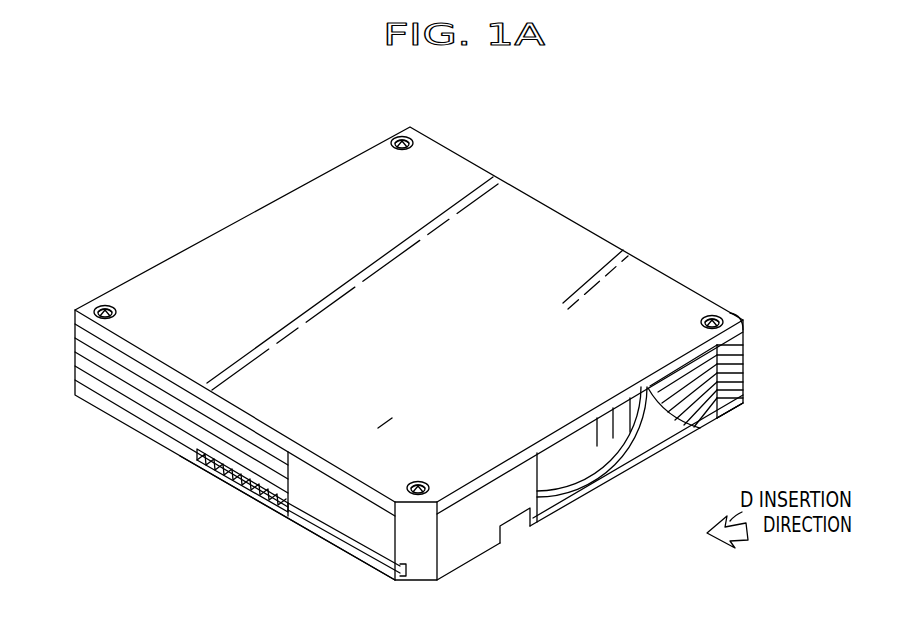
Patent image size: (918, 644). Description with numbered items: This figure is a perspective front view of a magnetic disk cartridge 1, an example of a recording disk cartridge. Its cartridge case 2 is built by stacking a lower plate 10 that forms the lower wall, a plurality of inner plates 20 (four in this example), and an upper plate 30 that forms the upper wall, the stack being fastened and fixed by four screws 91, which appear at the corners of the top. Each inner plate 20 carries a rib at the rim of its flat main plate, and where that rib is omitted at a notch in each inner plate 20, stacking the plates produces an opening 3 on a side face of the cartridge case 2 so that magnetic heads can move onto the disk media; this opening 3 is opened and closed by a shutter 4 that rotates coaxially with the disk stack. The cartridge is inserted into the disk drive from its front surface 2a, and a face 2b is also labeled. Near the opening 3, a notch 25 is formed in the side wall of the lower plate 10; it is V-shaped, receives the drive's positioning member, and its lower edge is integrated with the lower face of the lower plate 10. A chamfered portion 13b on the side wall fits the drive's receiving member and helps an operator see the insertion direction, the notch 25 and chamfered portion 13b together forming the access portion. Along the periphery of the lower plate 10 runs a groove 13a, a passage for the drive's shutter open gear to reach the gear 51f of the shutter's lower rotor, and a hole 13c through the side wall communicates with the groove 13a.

The magnetic disk cartridge 1 is at (515, 152).
The cartridge case 2 is at (543, 197).
The front surface 2a is at (462, 550).
The front face of cartridge case 2b is at (148, 440).
The opening 3 is at (670, 421).
The shutter 4 is at (558, 459).
The lower plate 10 is at (748, 409).
The groove 13a is at (347, 543).
The chamfered portion 13b is at (413, 568).
The hole 13c is at (323, 530).
The inner plates 20 is at (757, 350).
The notch 25 is at (520, 530).
The upper plate 30 is at (730, 300).
The gear 51f is at (228, 480).
The screws 91 is at (402, 136).